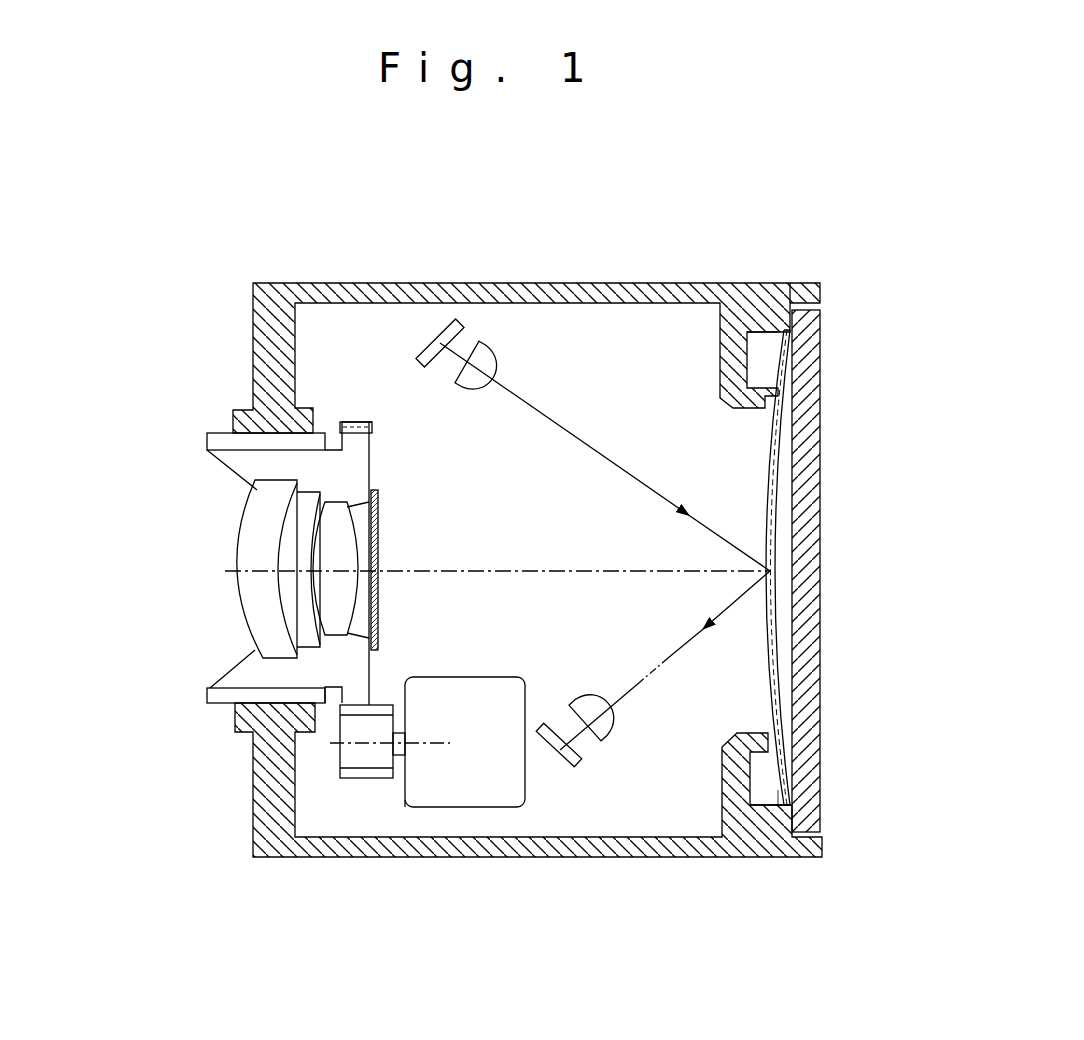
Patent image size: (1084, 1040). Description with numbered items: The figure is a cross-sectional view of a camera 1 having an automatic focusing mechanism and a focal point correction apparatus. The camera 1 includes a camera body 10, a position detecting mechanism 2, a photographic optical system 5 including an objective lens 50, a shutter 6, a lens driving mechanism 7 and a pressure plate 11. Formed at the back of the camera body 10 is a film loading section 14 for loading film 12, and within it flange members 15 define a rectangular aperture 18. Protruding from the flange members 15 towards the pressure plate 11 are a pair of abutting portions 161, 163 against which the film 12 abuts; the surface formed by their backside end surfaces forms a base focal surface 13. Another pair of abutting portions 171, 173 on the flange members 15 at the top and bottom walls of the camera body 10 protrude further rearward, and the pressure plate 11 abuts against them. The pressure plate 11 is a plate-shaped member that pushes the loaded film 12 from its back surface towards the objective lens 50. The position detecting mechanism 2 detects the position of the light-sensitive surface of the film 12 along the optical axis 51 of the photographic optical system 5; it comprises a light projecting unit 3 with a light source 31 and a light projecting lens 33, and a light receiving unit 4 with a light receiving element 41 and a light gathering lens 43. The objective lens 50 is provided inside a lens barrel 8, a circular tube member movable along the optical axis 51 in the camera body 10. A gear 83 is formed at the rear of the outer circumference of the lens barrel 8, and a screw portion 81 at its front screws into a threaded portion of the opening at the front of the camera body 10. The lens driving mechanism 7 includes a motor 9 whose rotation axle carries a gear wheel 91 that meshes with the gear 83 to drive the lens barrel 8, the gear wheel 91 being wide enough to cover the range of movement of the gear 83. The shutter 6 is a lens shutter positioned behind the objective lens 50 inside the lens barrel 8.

The camera 1 is at (146, 348).
The position detecting mechanism 2 is at (567, 373).
The light projecting unit 3 is at (478, 332).
The light receiving unit 4 is at (595, 760).
The photographic optical system 5 is at (213, 497).
The shutter 6 is at (379, 505).
The lens driving mechanism 7 is at (407, 815).
The lens barrel 8 is at (235, 463).
The motor 9 is at (475, 715).
The camera body 10 is at (275, 348).
The pressure plate 11 is at (808, 670).
The film 12 is at (780, 440).
The base focal surface 13 is at (767, 447).
The film loading section 14 is at (828, 518).
The flange members 15 is at (737, 352).
The rectangular aperture 18 is at (735, 500).
The light source 31 is at (443, 333).
The light projecting lens 33 is at (488, 357).
The light receiving element 41 is at (558, 760).
The light gathering lens 43 is at (618, 743).
The objective lens 50 is at (236, 547).
The optical axis 51 is at (600, 578).
The screw portion 81 is at (233, 440).
The gear 83 is at (350, 707).
The gear wheel 91 is at (370, 753).
The abutting portion 161 is at (790, 372).
The abutting portion 163 is at (762, 745).
The abutting portion 171 is at (786, 332).
The abutting portion 173 is at (797, 843).